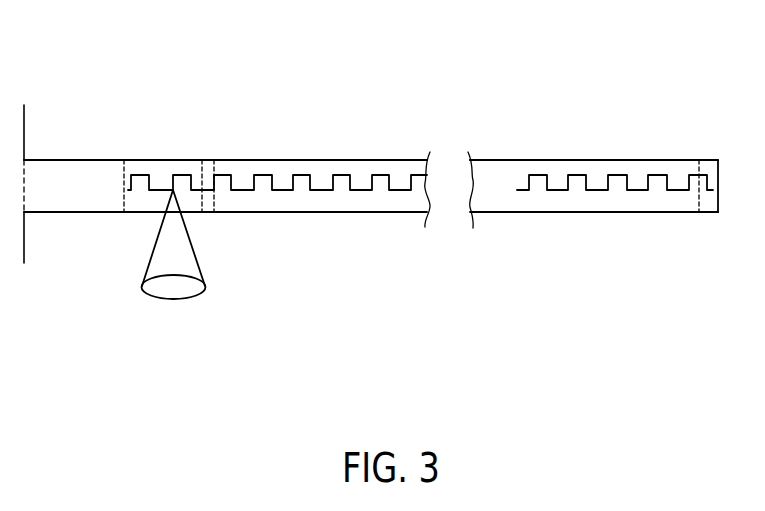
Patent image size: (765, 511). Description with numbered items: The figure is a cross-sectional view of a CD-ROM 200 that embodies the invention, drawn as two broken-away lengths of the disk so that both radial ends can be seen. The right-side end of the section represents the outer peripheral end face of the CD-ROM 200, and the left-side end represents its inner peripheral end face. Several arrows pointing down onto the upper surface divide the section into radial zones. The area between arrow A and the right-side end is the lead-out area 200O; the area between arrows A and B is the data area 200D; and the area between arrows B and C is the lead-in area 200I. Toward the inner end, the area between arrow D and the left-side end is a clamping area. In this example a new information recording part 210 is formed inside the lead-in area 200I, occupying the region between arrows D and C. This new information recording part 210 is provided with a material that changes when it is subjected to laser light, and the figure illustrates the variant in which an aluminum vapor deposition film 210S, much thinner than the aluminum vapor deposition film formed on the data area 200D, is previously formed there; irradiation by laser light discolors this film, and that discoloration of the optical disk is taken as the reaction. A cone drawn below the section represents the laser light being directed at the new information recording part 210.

The CD-ROM 200 is at (570, 110).
The aluminum vapor deposition film 210S is at (140, 174).
The new information recording part 210 is at (130, 213).
The lead-in area 200I is at (203, 213).
The data area 200D is at (500, 161).
The lead-out area 200O is at (712, 213).
The arrow D is at (124, 160).
The arrow C is at (202, 160).
The arrow B is at (214, 160).
The arrow A is at (699, 160).